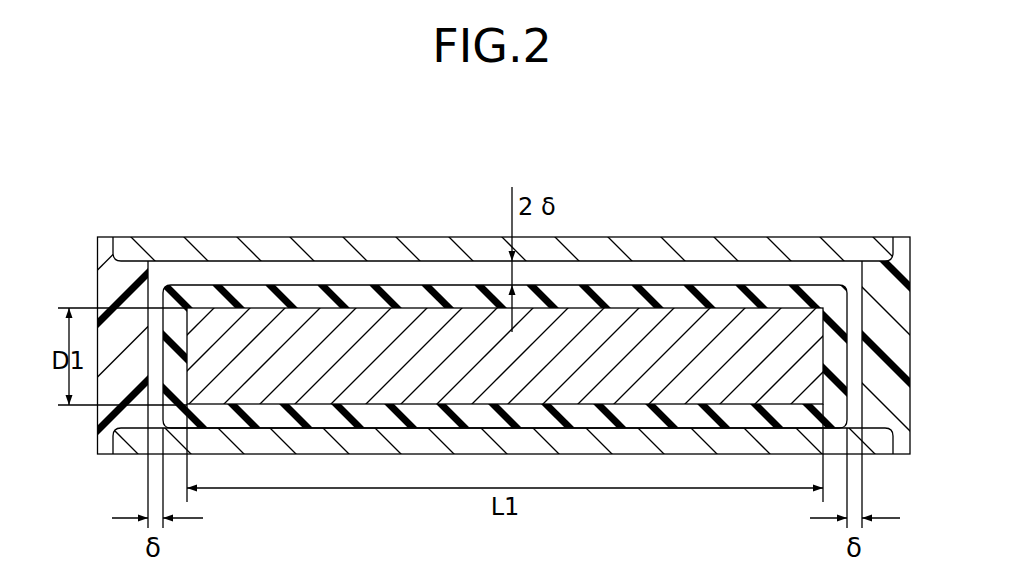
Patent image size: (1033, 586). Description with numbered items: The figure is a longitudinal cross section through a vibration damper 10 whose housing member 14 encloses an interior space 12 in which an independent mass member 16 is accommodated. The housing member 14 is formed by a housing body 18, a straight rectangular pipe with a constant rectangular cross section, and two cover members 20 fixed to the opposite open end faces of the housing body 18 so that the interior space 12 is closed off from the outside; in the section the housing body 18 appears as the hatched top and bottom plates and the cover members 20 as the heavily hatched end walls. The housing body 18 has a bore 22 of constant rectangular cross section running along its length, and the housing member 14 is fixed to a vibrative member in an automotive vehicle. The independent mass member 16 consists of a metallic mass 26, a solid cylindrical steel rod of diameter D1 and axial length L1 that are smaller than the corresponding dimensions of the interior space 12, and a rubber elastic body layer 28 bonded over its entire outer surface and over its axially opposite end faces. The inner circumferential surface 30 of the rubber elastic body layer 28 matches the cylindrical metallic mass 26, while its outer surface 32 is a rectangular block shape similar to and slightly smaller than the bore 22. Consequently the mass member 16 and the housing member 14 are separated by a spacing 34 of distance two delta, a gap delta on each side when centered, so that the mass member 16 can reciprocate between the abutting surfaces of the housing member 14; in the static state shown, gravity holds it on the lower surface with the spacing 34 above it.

The vibration damper 10 is at (710, 167).
The interior space 12 is at (225, 277).
The housing member 14 is at (477, 231).
The independent mass member 16 is at (612, 276).
The housing body 18 is at (740, 248).
The cover member 20 is at (120, 283).
The bore 22 is at (592, 268).
The metallic mass 26 is at (775, 333).
The rubber elastic body layer 28 is at (302, 296).
The inner circumferential surface 30 is at (395, 320).
The outer surface 32 is at (440, 284).
The spacing 34 is at (853, 298).